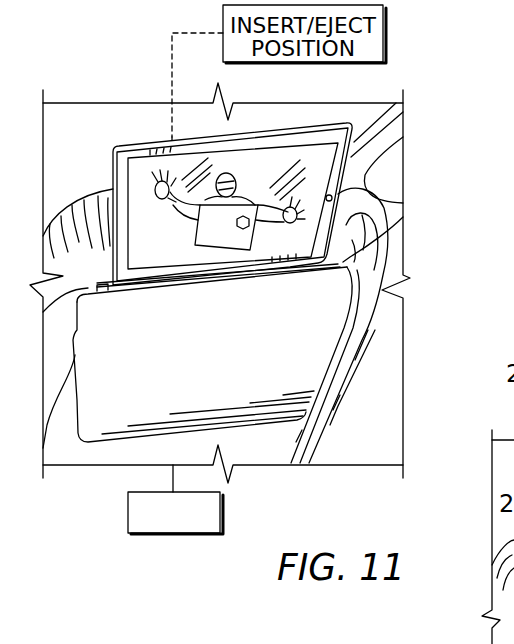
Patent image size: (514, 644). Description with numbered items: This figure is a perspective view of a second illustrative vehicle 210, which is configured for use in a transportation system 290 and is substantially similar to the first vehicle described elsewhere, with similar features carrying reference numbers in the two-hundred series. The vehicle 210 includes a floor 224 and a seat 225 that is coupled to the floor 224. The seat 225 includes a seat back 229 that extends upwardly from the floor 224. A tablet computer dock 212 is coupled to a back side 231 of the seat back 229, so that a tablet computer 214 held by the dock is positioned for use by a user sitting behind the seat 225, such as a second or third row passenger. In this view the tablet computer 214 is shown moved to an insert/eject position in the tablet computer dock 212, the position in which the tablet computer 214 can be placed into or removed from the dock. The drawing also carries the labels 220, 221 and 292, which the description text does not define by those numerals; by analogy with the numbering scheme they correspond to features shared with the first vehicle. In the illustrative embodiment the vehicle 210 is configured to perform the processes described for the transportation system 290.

The vehicle 210 is at (406, 141).
The tablet computer dock 212 is at (343, 328).
The tablet computer 214 is at (249, 171).
The slot 220 is at (101, 283).
The bolster 221 is at (403, 217).
The floor 224 is at (128, 512).
The seat 225 is at (352, 379).
The seat back 229 is at (341, 407).
The back side 231 is at (293, 433).
The transportation system 290 is at (140, 70).
The personal electronic device 292 is at (170, 159).